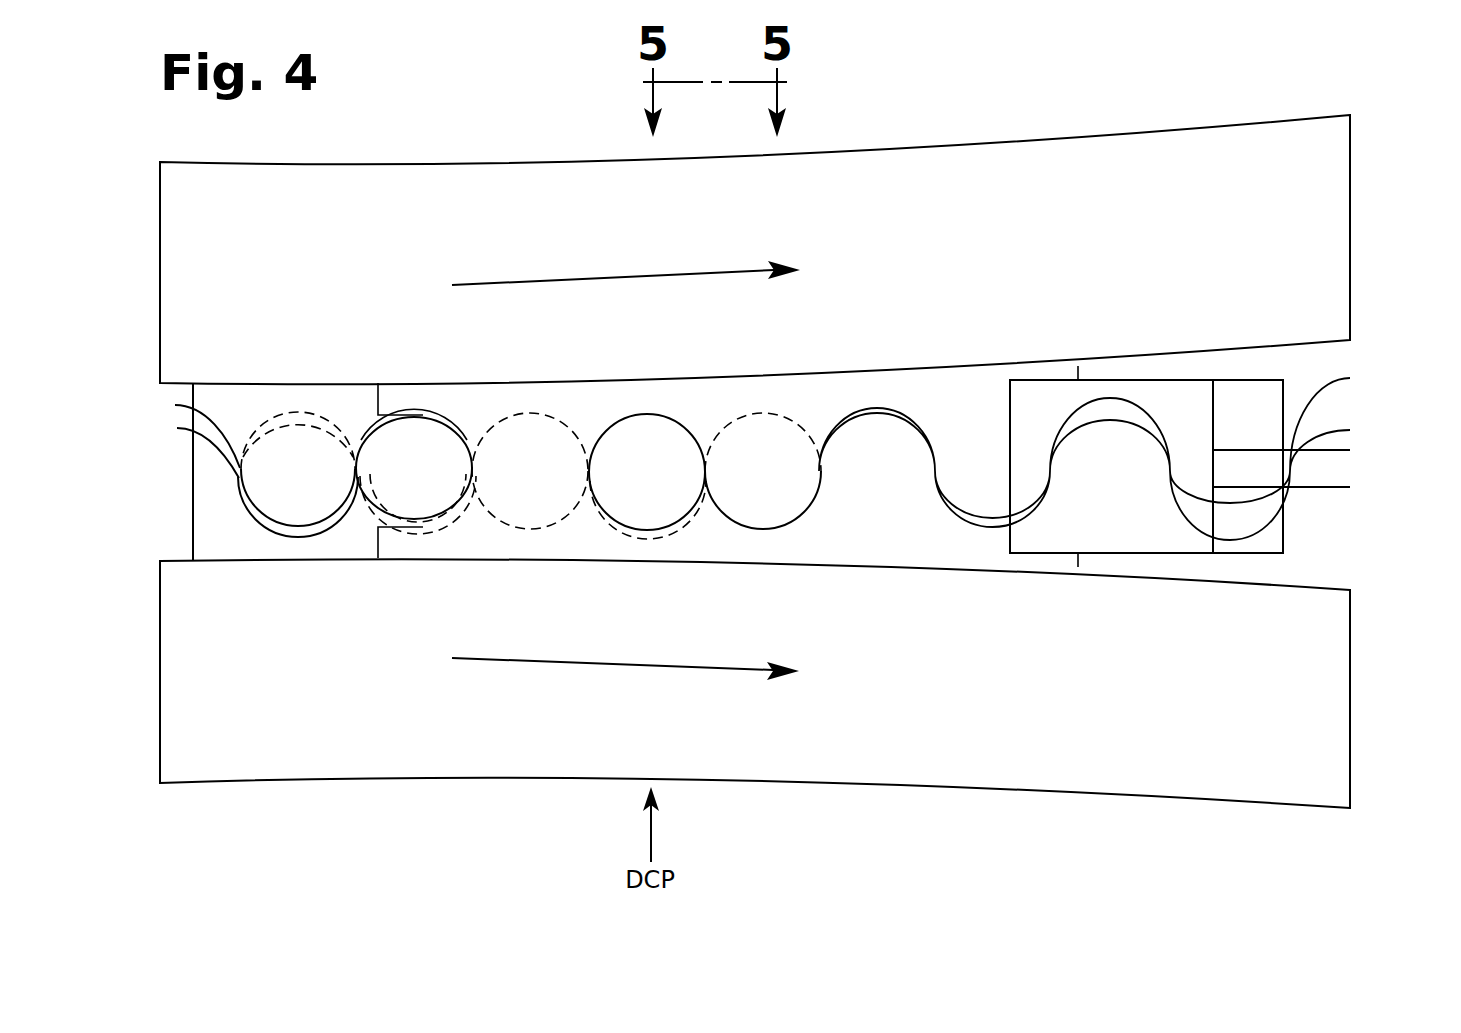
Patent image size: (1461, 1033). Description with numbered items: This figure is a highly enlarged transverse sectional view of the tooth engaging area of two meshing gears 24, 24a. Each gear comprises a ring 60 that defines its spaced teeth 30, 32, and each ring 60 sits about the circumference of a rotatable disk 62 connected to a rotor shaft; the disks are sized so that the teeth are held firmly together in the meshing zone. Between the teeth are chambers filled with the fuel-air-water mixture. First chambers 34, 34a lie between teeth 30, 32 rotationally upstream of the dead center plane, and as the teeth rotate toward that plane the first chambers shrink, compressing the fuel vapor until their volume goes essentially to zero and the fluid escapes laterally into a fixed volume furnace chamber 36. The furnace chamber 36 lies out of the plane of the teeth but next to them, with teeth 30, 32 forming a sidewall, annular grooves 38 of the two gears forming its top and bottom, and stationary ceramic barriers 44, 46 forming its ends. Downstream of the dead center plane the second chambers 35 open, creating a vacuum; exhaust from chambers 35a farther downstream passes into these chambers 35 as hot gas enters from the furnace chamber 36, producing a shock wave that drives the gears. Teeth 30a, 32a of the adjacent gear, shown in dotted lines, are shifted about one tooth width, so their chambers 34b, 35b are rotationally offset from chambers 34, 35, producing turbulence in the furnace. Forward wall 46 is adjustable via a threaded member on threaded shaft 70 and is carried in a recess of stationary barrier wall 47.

The meshing gear 24 is at (1115, 172).
The meshing gear 24a is at (1078, 767).
The rotatable disk 62 is at (594, 369).
The ring 60 is at (813, 193).
The annular groove 38 is at (195, 515).
The stationary ceramic barrier 44 is at (368, 492).
The gear tooth 30 is at (767, 465).
The second chamber 35b is at (300, 412).
The first chamber 34a is at (313, 537).
The first chamber 34 is at (184, 410).
The first chamber 34b is at (424, 530).
The gear tooth 30a is at (540, 416).
The furnace chamber 36 is at (647, 472).
The gear tooth 32a is at (608, 528).
The gear tooth 32 is at (871, 468).
The second chamber 35 is at (882, 406).
The forward wall 46 is at (1115, 507).
The second chamber 35a is at (1250, 520).
The threaded shaft 70 is at (1237, 447).
The stationary barrier wall 47 is at (1319, 355).